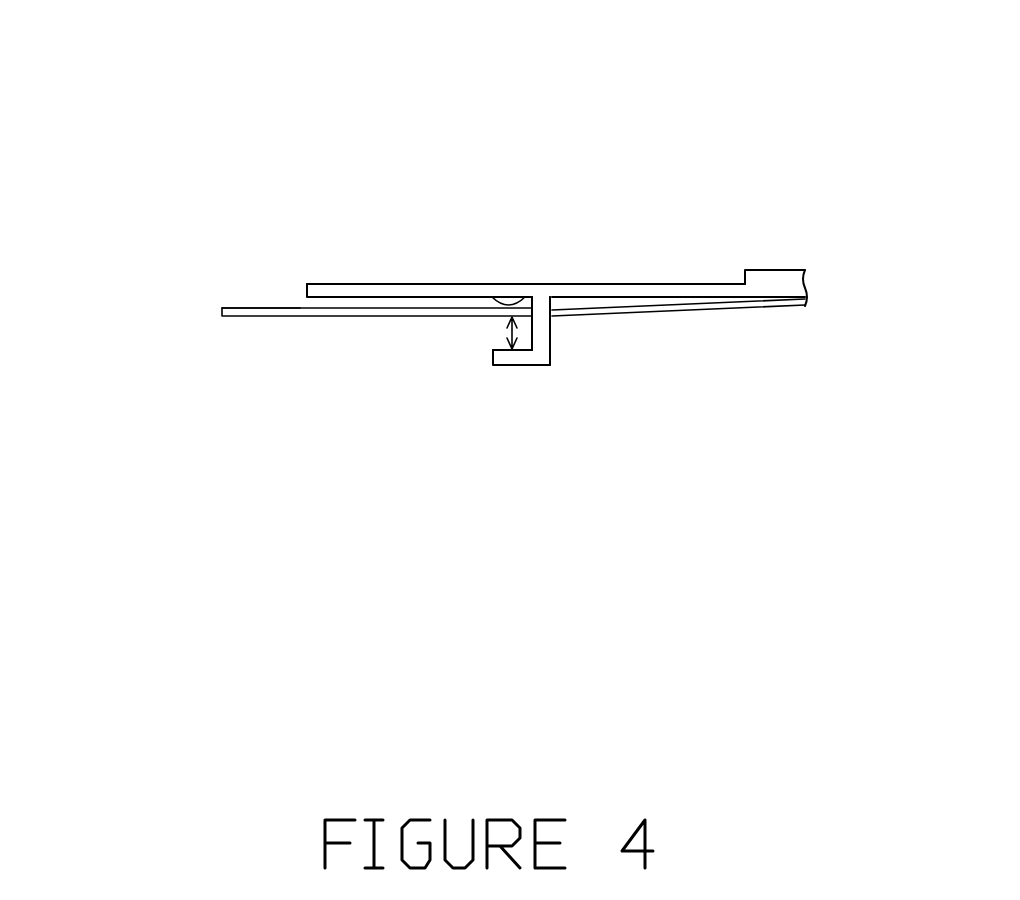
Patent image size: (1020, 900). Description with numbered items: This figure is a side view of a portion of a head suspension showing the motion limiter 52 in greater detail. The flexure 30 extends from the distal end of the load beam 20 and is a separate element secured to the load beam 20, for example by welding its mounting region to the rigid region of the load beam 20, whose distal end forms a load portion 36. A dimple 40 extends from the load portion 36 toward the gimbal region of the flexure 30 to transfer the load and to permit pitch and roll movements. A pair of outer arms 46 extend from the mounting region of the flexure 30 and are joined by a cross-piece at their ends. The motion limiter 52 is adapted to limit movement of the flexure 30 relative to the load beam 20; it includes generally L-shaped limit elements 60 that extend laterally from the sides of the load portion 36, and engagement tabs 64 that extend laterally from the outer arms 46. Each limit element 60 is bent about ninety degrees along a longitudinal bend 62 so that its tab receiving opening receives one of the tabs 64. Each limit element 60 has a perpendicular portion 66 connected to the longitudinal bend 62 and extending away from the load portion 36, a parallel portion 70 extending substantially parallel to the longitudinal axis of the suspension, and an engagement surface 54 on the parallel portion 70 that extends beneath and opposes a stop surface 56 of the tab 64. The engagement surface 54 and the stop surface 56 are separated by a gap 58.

The load beam 20 is at (727, 222).
The flexure 30 is at (187, 259).
The load portion 36 is at (284, 199).
The dimple 40 is at (506, 152).
The outer arms 46 is at (420, 331).
The motion limiter 52 is at (568, 434).
The engagement surface 54 is at (408, 422).
The stop surface 56 is at (629, 195).
The gap 58 is at (330, 429).
The limit elements 60 is at (725, 388).
The longitudinal bend 62 is at (513, 169).
The engagement tabs 64 is at (301, 383).
The perpendicular portion 66 is at (646, 408).
The parallel portion 70 is at (476, 444).